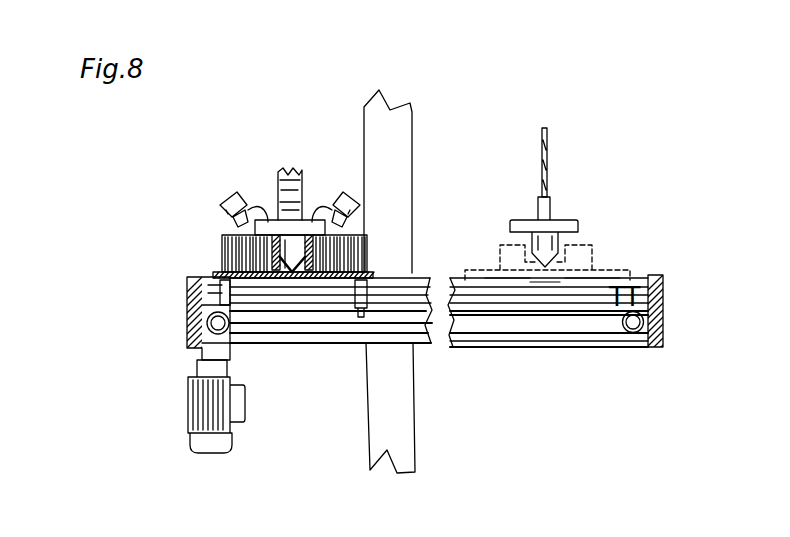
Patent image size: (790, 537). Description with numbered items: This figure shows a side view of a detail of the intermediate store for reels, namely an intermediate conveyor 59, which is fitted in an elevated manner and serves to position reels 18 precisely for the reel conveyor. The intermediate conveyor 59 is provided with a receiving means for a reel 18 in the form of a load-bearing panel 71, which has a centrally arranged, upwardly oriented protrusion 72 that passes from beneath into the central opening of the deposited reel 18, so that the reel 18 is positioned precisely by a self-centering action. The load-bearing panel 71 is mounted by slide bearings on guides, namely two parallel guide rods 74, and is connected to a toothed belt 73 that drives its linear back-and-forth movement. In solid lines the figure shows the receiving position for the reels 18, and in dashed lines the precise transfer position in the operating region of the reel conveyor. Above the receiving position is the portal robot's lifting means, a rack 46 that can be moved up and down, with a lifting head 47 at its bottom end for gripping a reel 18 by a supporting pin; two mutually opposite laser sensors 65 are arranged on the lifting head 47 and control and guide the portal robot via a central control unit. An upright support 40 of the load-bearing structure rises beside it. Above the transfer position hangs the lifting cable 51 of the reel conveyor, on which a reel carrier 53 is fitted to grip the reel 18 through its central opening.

The reel 18 is at (223, 252).
The upright support 40 is at (398, 140).
The rack 46 is at (278, 195).
The lifting head 47 is at (280, 237).
The lifting cable 51 is at (550, 147).
The reel carrier 53 is at (558, 222).
The intermediate conveyor 59 is at (480, 375).
The laser sensor 65 is at (223, 200).
The load-bearing panel 71 is at (213, 273).
The protrusion 72 is at (288, 272).
The belt 73 is at (337, 427).
The guide rod 74 is at (187, 333).